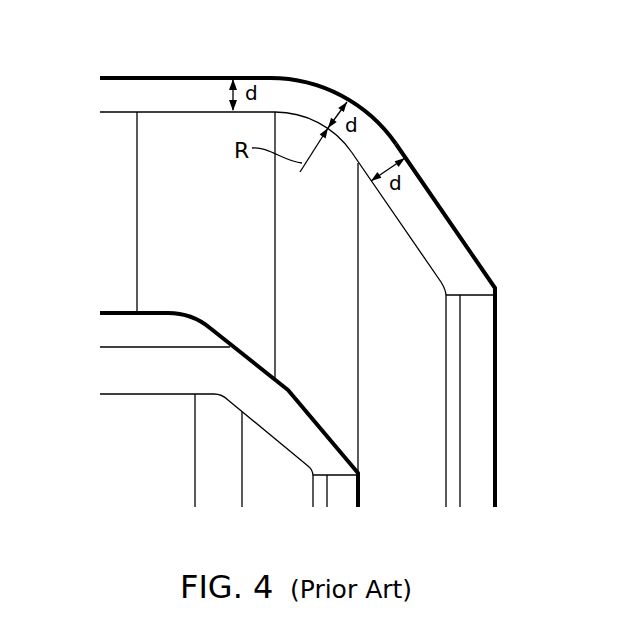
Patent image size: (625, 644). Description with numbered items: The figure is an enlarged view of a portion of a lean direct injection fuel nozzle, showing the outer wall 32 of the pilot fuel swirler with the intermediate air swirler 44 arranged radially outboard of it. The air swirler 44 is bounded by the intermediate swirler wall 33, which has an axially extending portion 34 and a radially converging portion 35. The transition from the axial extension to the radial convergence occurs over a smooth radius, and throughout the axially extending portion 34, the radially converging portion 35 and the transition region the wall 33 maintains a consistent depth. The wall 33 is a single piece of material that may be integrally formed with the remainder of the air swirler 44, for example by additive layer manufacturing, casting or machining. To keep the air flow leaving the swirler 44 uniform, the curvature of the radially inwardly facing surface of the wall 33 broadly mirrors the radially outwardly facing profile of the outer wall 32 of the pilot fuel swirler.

The outer wall 32 is at (238, 388).
The intermediate swirler wall 33 is at (282, 78).
The axially extending portion 34 is at (205, 92).
The radially converging portion 35 is at (435, 230).
The intermediate air swirler 44 is at (157, 220).